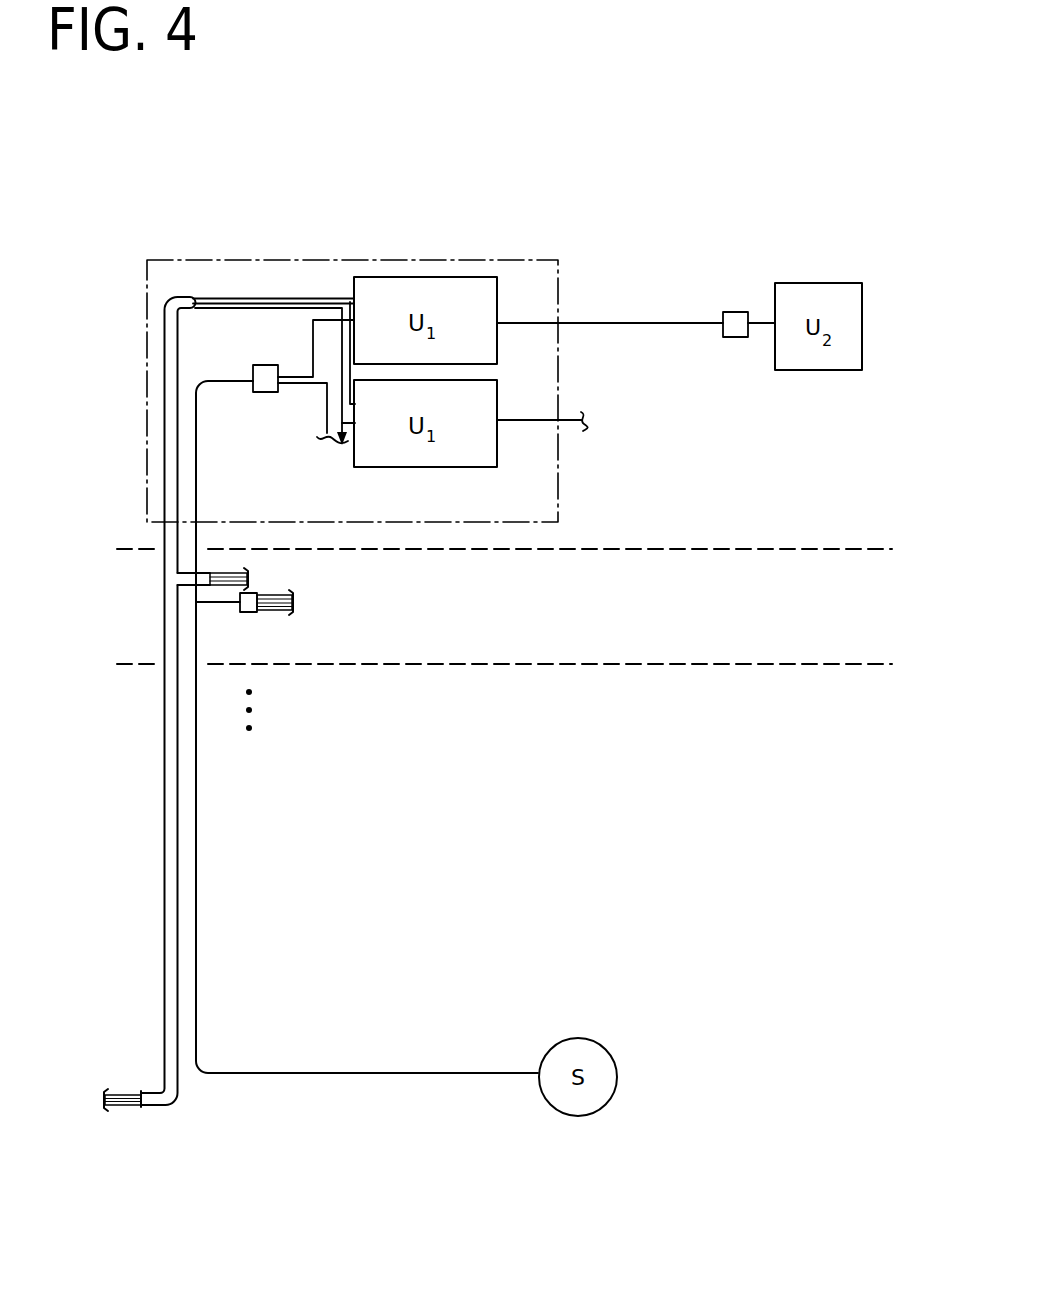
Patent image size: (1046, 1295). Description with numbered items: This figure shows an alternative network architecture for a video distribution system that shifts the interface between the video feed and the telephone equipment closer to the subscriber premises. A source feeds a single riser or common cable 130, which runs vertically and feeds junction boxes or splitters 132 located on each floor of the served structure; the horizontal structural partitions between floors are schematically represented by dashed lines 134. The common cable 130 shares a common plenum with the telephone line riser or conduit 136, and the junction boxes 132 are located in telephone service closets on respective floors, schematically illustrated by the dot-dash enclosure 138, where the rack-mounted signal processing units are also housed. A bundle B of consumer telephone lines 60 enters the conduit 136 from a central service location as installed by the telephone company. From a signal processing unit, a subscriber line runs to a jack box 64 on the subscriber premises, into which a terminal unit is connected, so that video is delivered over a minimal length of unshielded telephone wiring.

The dot-dash enclosure 138 is at (195, 236).
The jack box 64 is at (736, 311).
The junction box 132 is at (263, 395).
The dashed lines 134 is at (640, 550).
The telephone line riser 136 is at (164, 770).
The common cable 130 is at (197, 870).
The subscriber lines 60 is at (122, 1092).
The bundle B is at (126, 1118).